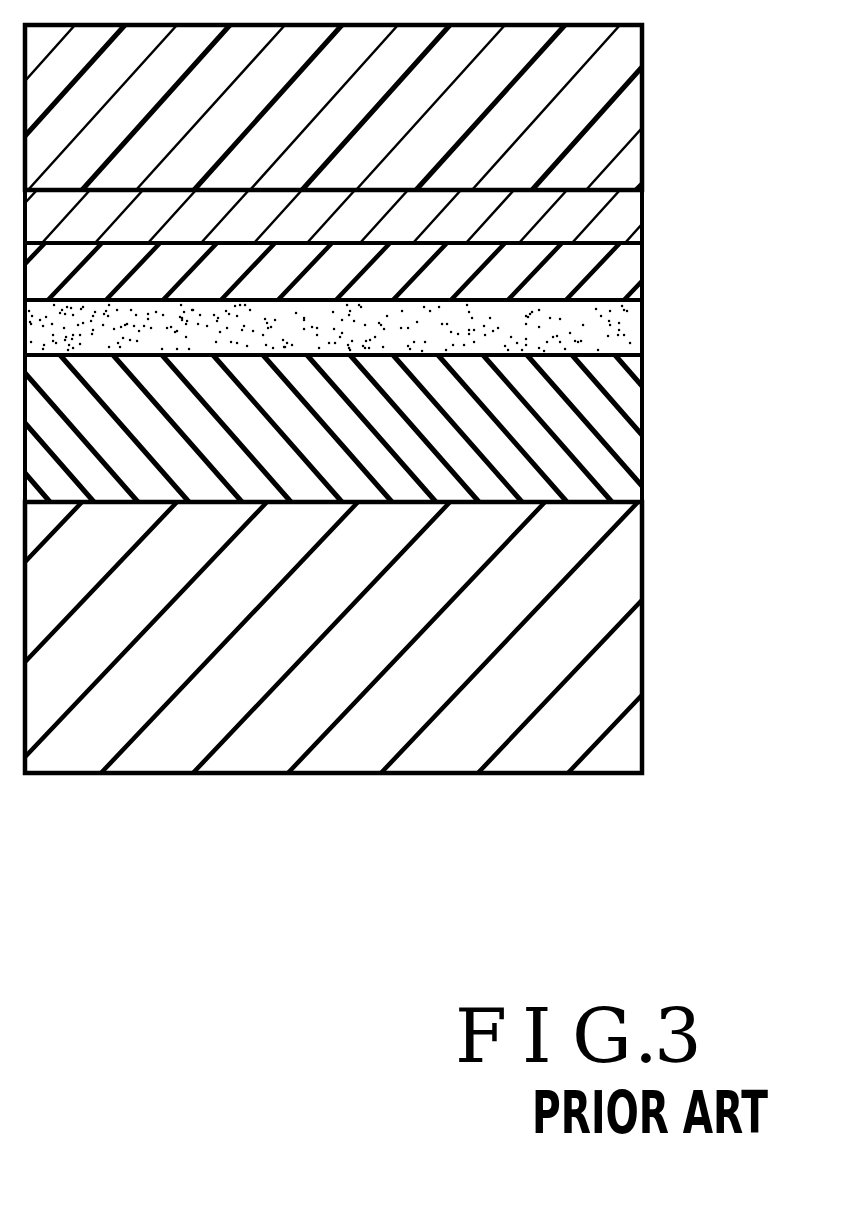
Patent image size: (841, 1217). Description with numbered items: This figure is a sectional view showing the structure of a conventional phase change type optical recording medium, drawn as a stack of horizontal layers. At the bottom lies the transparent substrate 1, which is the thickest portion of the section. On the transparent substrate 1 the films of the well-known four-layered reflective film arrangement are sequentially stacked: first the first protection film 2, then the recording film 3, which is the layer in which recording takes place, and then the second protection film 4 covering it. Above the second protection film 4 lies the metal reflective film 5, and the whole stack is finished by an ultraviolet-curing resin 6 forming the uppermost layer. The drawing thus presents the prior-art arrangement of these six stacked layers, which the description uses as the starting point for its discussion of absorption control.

The transparent substrate 1 is at (568, 632).
The first protection film 2 is at (573, 437).
The recording film 3 is at (573, 328).
The second protection film 4 is at (573, 270).
The metal reflective film 5 is at (578, 215).
The ultraviolet-curing resin 6 is at (575, 109).